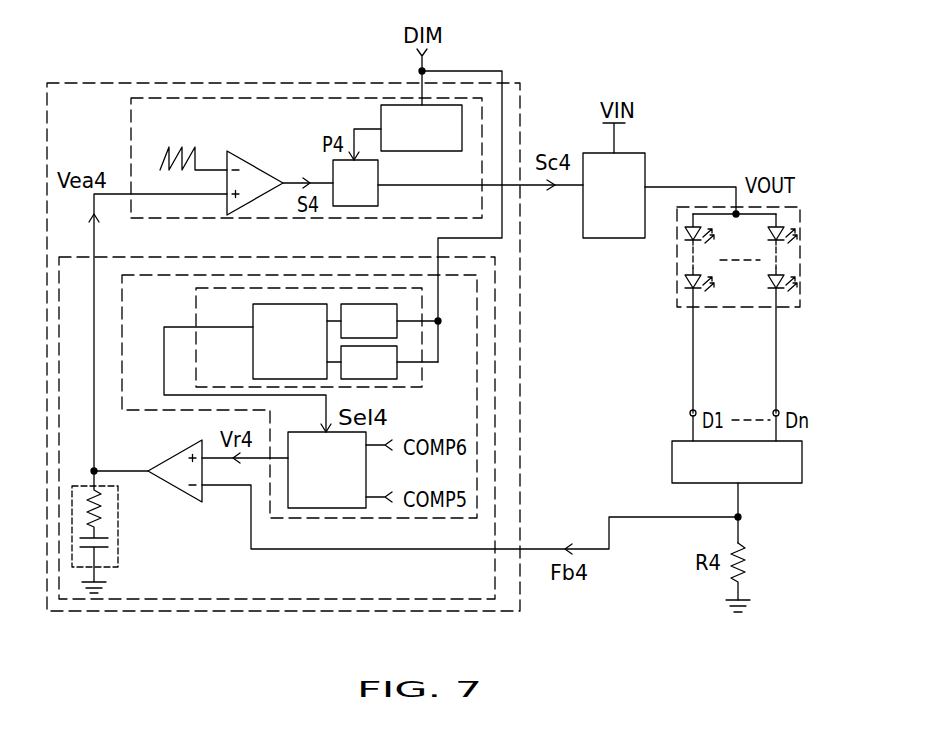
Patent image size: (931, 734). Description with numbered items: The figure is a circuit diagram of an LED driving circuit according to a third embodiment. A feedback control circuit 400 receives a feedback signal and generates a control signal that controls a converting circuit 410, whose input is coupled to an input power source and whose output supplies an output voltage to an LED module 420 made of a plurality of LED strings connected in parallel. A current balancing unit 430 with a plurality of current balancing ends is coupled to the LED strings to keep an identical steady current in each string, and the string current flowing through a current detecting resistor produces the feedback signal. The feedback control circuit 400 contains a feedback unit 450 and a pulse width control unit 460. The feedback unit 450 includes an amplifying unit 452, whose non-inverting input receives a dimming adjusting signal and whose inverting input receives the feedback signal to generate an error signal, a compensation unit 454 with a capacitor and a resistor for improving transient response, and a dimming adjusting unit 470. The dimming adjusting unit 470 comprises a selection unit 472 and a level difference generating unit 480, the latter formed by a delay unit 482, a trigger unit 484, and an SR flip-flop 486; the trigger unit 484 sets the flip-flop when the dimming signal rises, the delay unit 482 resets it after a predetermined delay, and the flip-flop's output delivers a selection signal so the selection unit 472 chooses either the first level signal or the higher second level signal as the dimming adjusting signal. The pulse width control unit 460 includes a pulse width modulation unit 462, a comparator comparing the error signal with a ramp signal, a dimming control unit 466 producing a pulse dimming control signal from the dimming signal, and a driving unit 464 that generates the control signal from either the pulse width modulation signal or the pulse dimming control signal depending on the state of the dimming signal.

The feedback control circuit 400 is at (106, 84).
The converting circuit 410 is at (632, 208).
The LED module 420 is at (800, 262).
The current balancing unit 430 is at (756, 474).
The feedback unit 450 is at (101, 266).
The amplifying unit 452 is at (191, 487).
The compensation unit 454 is at (118, 556).
The pulse width control unit 460 is at (136, 134).
The pulse width modulation unit 462 is at (278, 172).
The driving unit 464 is at (372, 195).
The dimming control unit 466 is at (440, 140).
The dimming adjusting unit 470 is at (150, 402).
The selection unit 472 is at (349, 484).
The level difference generating unit 480 is at (204, 303).
The delay unit 482 is at (385, 333).
The trigger unit 484 is at (385, 375).
The SR flip-flop 486 is at (261, 341).